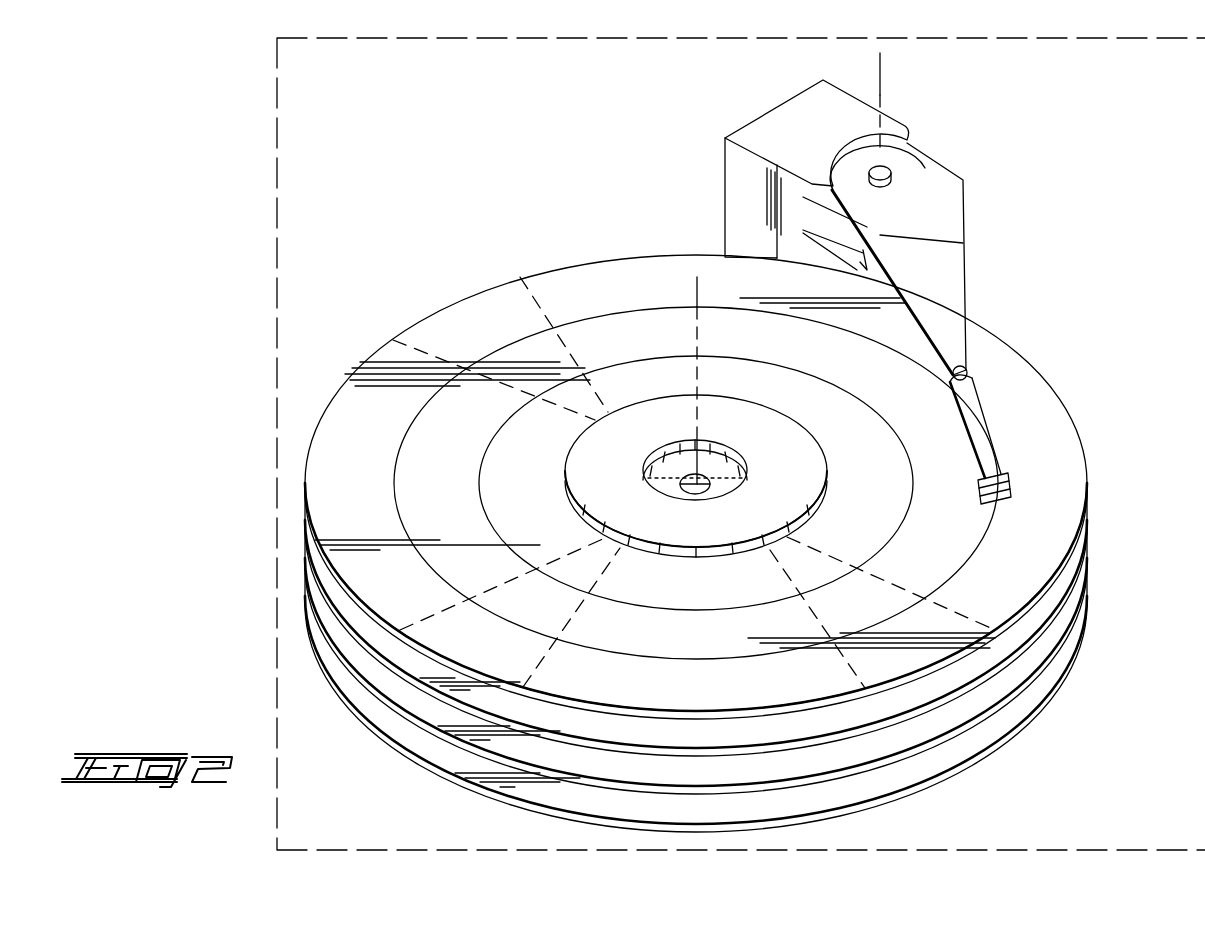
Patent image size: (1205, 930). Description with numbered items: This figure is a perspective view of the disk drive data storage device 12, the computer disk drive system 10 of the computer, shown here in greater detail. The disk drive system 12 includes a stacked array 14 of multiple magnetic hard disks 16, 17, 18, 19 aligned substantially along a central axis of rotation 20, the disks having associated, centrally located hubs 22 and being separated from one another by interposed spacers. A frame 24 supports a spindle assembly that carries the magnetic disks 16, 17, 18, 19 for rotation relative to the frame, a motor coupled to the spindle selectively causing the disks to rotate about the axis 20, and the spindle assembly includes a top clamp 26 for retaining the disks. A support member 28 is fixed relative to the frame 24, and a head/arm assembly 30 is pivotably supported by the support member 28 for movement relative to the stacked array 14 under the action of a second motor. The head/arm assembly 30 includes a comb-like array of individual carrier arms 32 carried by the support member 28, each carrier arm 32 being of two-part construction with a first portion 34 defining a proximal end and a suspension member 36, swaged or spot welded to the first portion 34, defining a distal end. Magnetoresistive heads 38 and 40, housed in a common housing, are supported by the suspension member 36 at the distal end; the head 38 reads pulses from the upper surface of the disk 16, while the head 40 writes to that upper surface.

The disk drive 10 is at (277, 321).
The disk drive data storage device 12 is at (408, 193).
The stacked array 14 is at (755, 544).
The magnetic hard disk 16 is at (1053, 525).
The magnetic hard disk 17 is at (1037, 618).
The magnetic hard disk 18 is at (975, 703).
The magnetic hard disk 19 is at (928, 765).
The central axis of rotation 20 is at (697, 292).
The hub 22 is at (676, 400).
The frame 24 is at (775, 122).
The top clamp 26 is at (597, 470).
The support member 28 is at (948, 160).
The head/arm assembly 30 is at (943, 385).
The carrier arm 32 is at (857, 267).
The first portion 34 is at (945, 300).
The suspension member 36 is at (992, 423).
The magnetoresistive head 38 is at (997, 498).
The magnetoresistive head 40 is at (963, 445).